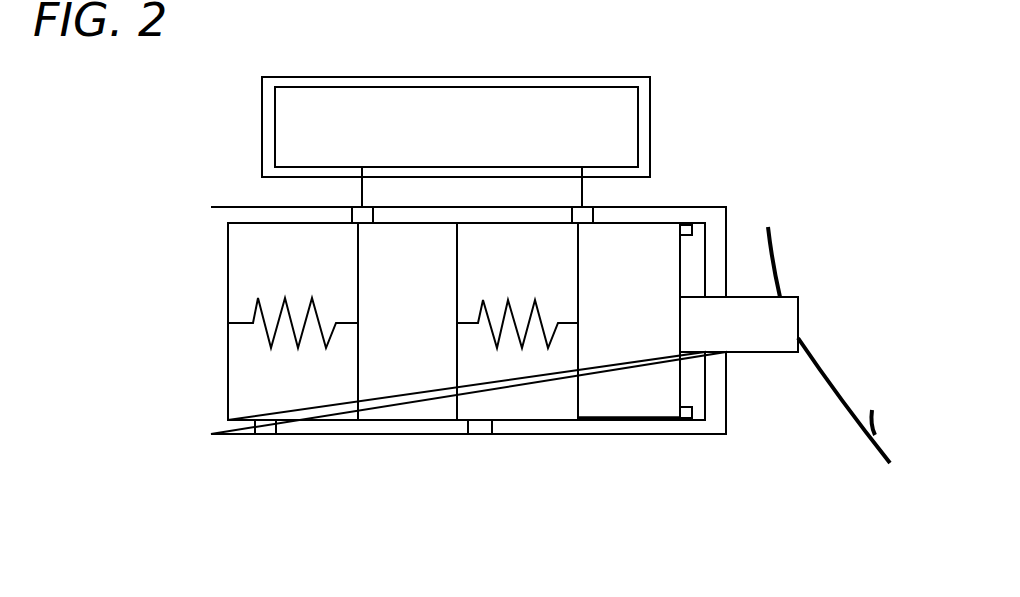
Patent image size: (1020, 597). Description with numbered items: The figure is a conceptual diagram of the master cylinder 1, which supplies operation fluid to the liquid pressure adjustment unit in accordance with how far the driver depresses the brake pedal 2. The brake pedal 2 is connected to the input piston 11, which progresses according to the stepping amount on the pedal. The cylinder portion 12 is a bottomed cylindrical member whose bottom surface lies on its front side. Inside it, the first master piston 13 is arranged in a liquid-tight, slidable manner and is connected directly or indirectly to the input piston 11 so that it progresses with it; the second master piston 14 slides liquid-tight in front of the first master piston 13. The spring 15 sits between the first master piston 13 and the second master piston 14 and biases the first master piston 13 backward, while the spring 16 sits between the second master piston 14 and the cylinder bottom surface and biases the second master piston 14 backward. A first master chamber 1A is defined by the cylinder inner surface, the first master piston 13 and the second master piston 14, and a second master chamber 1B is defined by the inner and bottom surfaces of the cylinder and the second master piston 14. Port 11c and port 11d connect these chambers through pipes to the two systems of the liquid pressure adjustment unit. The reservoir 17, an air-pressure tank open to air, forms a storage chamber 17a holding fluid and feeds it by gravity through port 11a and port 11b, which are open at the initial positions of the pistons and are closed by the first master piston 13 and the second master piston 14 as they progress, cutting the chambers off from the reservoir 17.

The master cylinder 1 is at (457, 345).
The brake pedal 2 is at (823, 368).
The input piston 11 is at (718, 213).
The port 11a is at (583, 213).
The port 11b is at (355, 213).
The port 11c is at (478, 437).
The port 11d is at (265, 436).
The cylinder portion 12 is at (737, 332).
The first master piston 13 is at (627, 393).
The second master piston 14 is at (410, 393).
The spring 15 is at (490, 333).
The spring 16 is at (283, 310).
The reservoir 17 is at (262, 118).
The storage chamber 17a is at (628, 140).
The first master chamber 1A is at (531, 367).
The second master chamber 1B is at (310, 400).